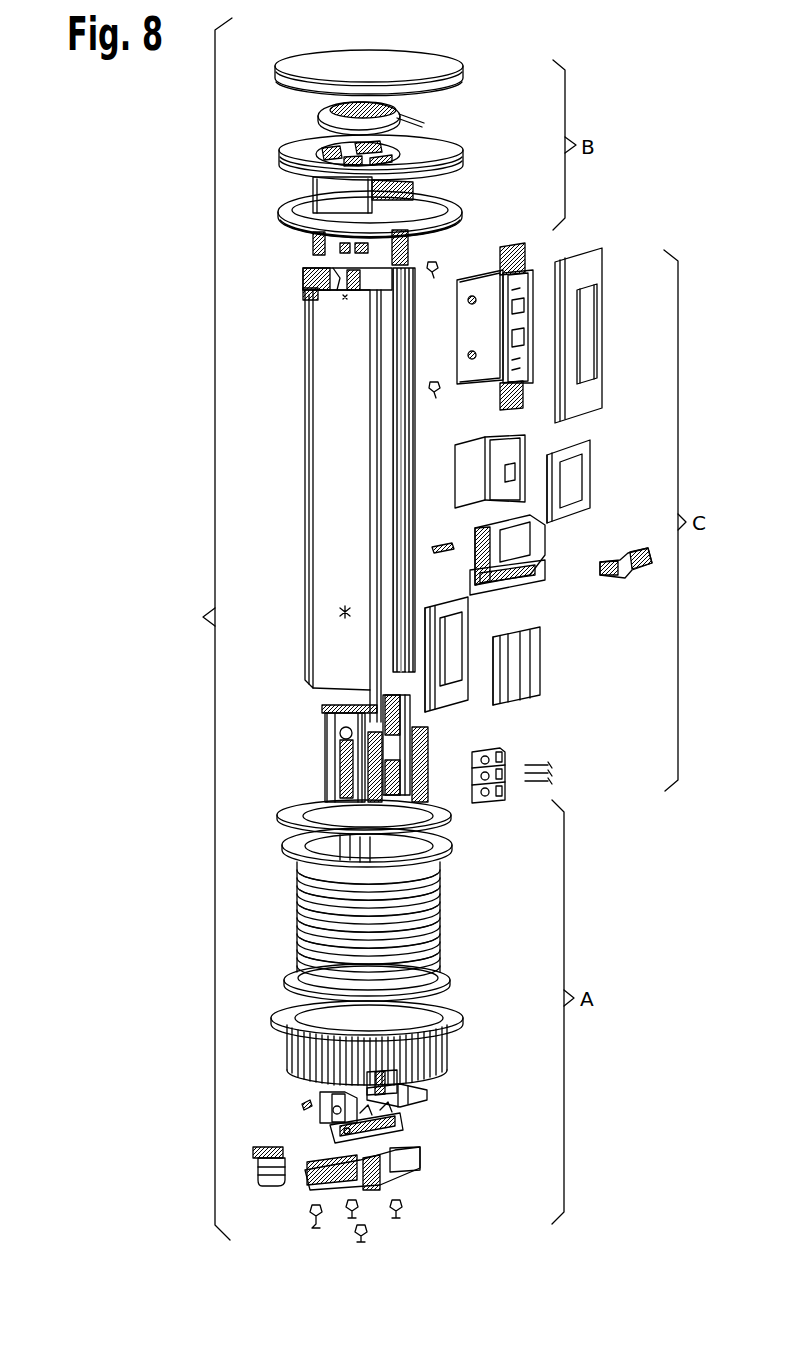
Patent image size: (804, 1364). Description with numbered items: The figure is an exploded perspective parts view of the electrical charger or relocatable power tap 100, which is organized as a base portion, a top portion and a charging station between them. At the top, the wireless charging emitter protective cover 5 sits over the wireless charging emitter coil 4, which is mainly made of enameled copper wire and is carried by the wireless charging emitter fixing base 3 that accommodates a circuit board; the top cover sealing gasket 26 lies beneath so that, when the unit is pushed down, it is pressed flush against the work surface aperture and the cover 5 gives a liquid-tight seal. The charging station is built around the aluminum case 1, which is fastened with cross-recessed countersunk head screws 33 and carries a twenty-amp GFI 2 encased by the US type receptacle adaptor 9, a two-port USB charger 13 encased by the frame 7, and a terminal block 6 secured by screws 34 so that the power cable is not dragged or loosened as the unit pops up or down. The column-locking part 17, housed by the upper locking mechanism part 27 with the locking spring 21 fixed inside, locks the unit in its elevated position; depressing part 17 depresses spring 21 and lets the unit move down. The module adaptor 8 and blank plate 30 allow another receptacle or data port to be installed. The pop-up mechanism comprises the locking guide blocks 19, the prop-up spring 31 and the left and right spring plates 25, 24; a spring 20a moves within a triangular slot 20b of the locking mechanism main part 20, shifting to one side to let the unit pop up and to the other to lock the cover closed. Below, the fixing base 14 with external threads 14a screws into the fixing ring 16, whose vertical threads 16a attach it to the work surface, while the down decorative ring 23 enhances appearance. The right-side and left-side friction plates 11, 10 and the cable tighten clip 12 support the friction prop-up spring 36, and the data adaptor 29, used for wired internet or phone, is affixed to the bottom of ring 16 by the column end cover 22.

The electrical charger/relocatable power tap 100 is at (191, 617).
The wireless charging emitter protective cover 5 is at (425, 58).
The wireless charging emitter coil 4 is at (400, 110).
The wireless charging emitter fixing base 3 is at (456, 148).
The top cover sealing gasket 26 is at (452, 206).
The locking mechanism main part 20 is at (310, 282).
The spring 20a is at (335, 270).
The triangular slot 20b is at (303, 296).
The aluminum case 1 is at (335, 430).
The cross-recessed countersunk head screws 33 is at (340, 612).
The 20A GFI 2 is at (538, 292).
The US type receptacle adaptor 9 is at (602, 243).
The type 45 2 USB charger 13 is at (480, 445).
The PUR single type 45 frame 7 is at (590, 450).
The locking spring 21 is at (440, 542).
The upper locking mechanism part 27 is at (540, 530).
The column-locking part 17 is at (615, 578).
The type 45 size module adaptor 8 is at (468, 602).
The blank plate 30 is at (542, 650).
The locking guide block 19 is at (325, 743).
The left-side spring plate 25 is at (325, 788).
The down decorative ring 23 is at (292, 810).
The right-side spring plate 24 is at (428, 783).
The prop-up spring 31 is at (428, 745).
The GB cross-screws 34 is at (540, 760).
The terminal block 6 is at (495, 803).
The PUR fixing base 14 is at (450, 852).
The external threads 14a is at (440, 912).
The PUR fixing ring 16 is at (462, 1010).
The vertical threads 16a is at (452, 1045).
The right-side friction plate 11 is at (370, 1088).
The left-side friction plate 10 is at (323, 1107).
The friction prop-up spring 36 is at (420, 1097).
The data adaptor 29 is at (403, 1130).
The cable tighten clip 12 is at (256, 1180).
The column end cover 22 is at (395, 1170).